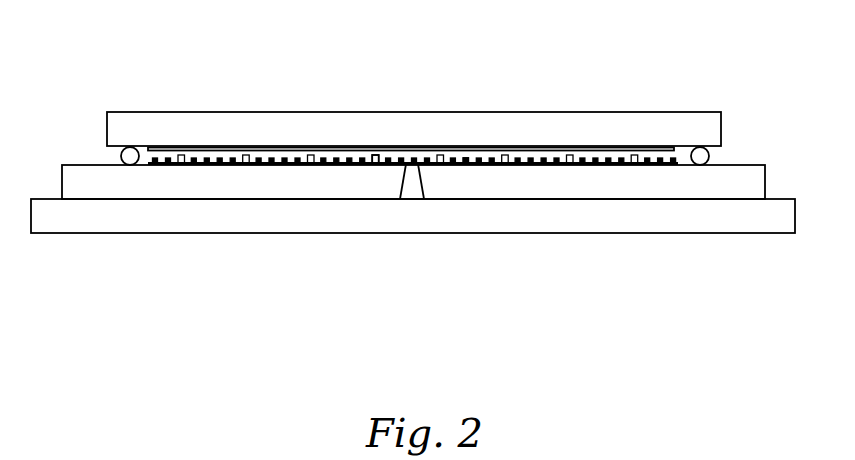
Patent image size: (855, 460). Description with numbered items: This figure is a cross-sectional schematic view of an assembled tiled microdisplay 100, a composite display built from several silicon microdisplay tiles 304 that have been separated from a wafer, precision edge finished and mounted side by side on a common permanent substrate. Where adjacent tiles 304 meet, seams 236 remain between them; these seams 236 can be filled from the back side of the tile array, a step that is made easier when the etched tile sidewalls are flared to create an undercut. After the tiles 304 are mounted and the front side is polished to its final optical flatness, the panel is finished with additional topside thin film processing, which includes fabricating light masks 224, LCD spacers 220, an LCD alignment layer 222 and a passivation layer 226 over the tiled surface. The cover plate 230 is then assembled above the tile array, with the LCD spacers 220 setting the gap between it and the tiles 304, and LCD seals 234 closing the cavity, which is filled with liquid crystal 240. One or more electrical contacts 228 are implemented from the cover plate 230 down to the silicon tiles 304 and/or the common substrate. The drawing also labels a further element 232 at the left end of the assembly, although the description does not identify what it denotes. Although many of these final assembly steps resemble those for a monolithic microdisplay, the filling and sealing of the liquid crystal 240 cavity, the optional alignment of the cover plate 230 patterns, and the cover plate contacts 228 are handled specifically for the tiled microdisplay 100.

The tiled microdisplay 100 is at (768, 95).
The LCD spacers 220 is at (372, 158).
The LCD alignment layer 222 is at (323, 152).
The light mask 224 is at (667, 165).
The passivation layer 226 is at (353, 165).
The electrical contact 228 is at (527, 150).
The cover plate 230 is at (243, 124).
The die 232 is at (148, 157).
The LCD seal 234 is at (121, 155).
The seam 236 is at (413, 190).
The liquid crystal 240 is at (463, 158).
The microdisplay tile 304 is at (85, 188).